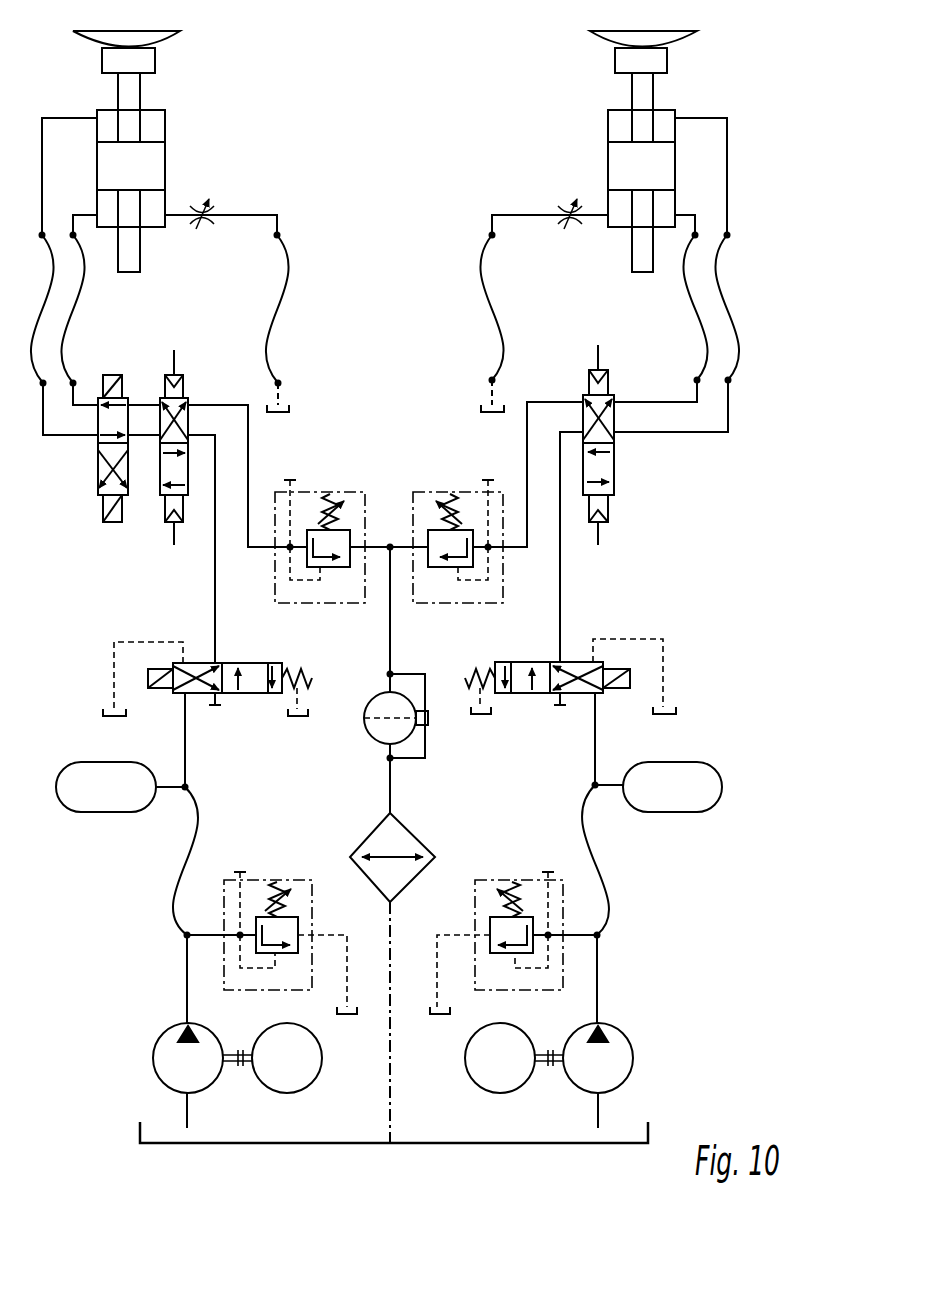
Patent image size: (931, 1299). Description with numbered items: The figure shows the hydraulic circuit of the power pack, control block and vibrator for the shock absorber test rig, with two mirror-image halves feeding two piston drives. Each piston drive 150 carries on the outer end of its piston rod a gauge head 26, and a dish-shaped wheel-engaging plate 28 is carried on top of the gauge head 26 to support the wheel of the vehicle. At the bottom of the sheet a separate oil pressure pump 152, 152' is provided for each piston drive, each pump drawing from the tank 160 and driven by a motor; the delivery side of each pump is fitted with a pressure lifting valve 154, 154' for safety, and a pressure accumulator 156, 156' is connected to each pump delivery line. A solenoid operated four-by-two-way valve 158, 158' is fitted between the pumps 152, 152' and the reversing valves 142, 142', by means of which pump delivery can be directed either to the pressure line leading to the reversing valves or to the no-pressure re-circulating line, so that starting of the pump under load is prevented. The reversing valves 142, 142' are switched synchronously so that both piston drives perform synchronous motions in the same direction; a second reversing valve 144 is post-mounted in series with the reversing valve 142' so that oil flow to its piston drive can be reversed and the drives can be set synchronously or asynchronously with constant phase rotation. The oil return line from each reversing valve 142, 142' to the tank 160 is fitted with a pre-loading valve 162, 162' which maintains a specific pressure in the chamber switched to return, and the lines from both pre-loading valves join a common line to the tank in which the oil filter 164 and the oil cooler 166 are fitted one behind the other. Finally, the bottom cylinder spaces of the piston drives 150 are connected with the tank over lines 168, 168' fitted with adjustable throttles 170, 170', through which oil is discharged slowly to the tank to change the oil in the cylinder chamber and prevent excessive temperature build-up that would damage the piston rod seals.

The wheel-engaging plate 28 is at (610, 35).
The gauge head 26 is at (620, 62).
The piston drive 150 is at (615, 112).
The throttle 170' is at (234, 200).
The throttle 170 is at (546, 200).
The line 168' is at (221, 258).
The line 168 is at (553, 258).
The reversing valve 144 is at (127, 392).
The reversing valve 142' is at (203, 441).
The reversing valve 142 is at (626, 441).
The pre-loading valve 162' is at (324, 522).
The pre-loading valve 162 is at (458, 522).
The oil filter 164 is at (397, 693).
The oil cooler 166 is at (398, 835).
The solenoid operated 4/2-way valve 158' is at (207, 659).
The solenoid operated 4/2-way valve 158 is at (570, 658).
The pressure accumulator 156' is at (106, 769).
The pressure accumulator 156 is at (672, 769).
The pressure lifting valve 154' is at (290, 918).
The pressure lifting valve 154 is at (496, 918).
The oil pressure pump 152' is at (237, 1082).
The oil pressure pump 152 is at (549, 1082).
The tank 160 is at (617, 1137).